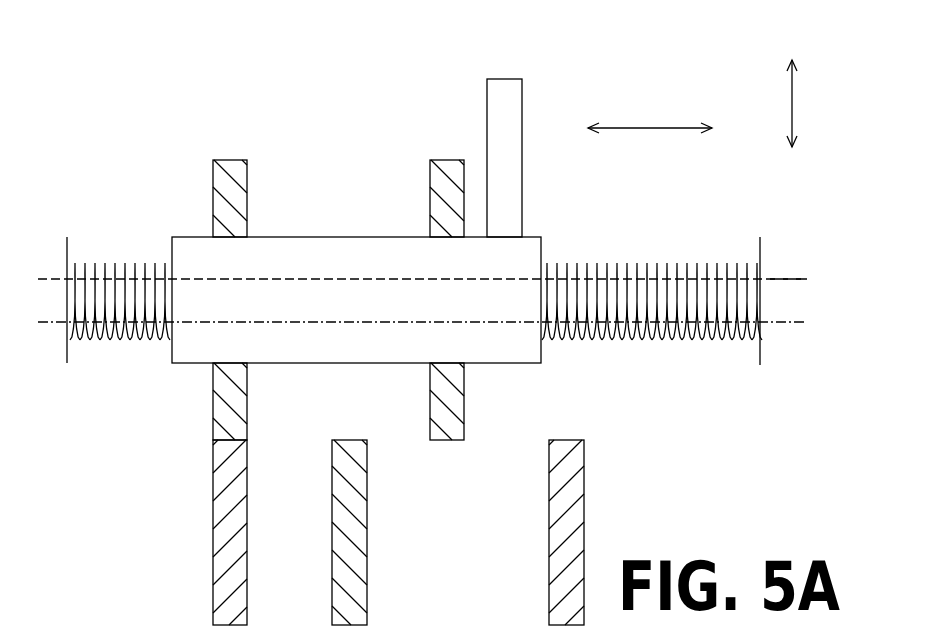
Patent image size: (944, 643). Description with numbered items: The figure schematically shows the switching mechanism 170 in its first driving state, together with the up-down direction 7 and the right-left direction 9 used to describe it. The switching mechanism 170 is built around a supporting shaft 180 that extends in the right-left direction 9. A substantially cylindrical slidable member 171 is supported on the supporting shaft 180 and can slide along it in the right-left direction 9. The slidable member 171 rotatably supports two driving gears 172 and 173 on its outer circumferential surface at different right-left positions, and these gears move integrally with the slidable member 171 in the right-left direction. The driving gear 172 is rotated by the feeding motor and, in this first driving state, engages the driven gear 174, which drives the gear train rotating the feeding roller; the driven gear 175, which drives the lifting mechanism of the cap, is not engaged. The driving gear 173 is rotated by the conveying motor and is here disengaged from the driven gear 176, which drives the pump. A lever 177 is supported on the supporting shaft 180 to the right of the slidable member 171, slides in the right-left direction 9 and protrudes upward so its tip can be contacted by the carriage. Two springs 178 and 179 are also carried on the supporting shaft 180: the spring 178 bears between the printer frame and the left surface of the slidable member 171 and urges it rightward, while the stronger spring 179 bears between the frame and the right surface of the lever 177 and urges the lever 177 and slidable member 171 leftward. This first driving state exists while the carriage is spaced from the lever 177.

The switching mechanism 170 is at (140, 125).
The slidable member 171 is at (343, 237).
The driving gear 172 is at (229, 160).
The driving gear 173 is at (445, 160).
The driven gear 174 is at (213, 527).
The driven gear 175 is at (332, 527).
The driven gear 176 is at (549, 530).
The lever 177 is at (500, 79).
The spring 178 is at (120, 263).
The spring 179 is at (650, 263).
The supporting shaft 180 is at (784, 279).
The right-left direction 9 is at (653, 128).
The up-down direction 7 is at (796, 100).